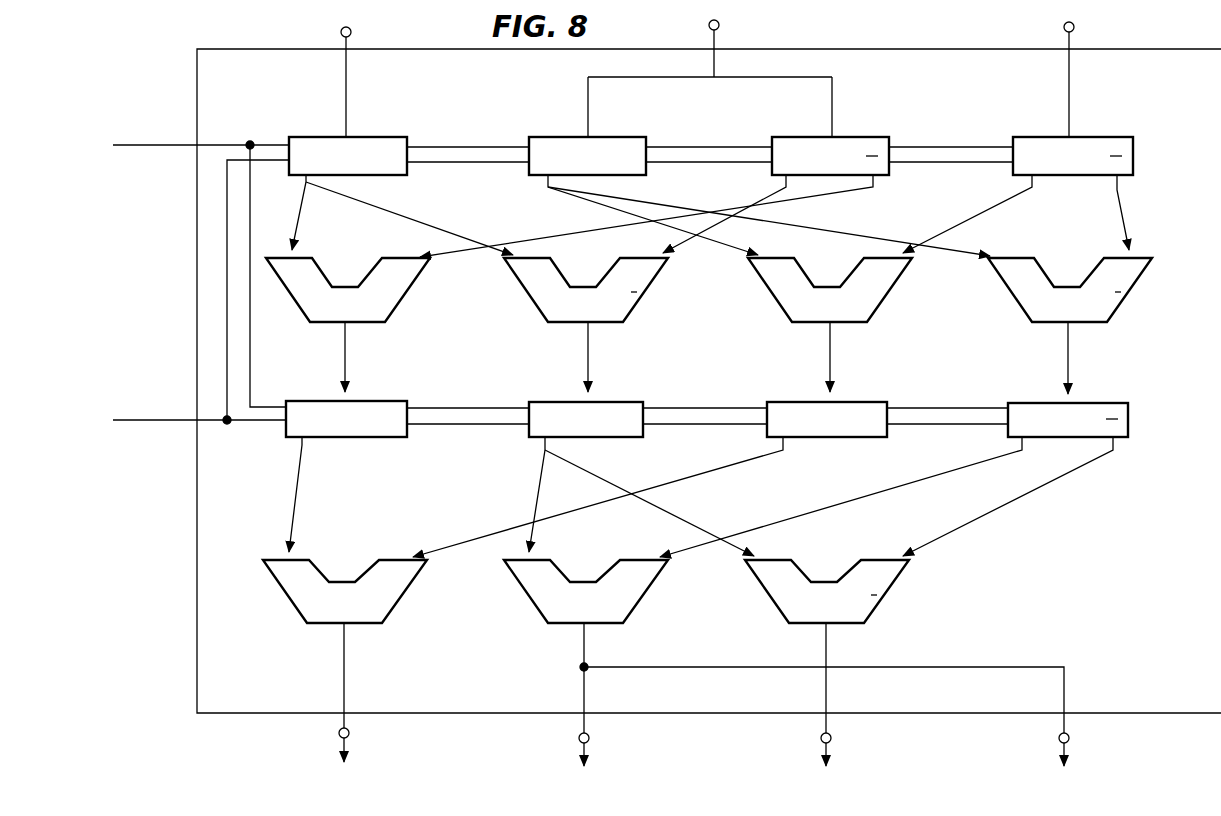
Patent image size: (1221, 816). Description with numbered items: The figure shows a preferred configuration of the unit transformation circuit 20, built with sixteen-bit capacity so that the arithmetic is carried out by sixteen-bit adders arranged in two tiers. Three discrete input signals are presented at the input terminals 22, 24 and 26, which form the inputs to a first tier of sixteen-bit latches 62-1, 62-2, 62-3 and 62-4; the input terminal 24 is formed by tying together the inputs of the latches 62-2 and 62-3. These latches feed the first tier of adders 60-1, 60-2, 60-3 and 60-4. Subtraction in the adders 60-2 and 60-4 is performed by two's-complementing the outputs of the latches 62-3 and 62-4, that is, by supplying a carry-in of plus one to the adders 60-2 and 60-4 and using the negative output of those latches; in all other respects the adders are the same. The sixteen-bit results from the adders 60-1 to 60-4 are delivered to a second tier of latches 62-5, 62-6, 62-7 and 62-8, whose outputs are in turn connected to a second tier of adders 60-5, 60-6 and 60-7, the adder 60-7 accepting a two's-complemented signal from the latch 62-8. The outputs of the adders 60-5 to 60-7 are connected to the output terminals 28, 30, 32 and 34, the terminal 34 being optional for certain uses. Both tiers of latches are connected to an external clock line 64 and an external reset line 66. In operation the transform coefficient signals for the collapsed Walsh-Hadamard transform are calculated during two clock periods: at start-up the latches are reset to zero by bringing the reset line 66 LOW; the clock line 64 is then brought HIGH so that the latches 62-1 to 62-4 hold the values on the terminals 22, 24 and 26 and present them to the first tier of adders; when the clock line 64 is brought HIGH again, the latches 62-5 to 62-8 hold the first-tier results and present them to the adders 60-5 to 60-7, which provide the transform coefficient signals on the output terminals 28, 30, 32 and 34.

The unit transformation circuit 20 is at (197, 69).
The input terminal 22 is at (351, 30).
The input terminal 24 is at (719, 23).
The input terminal 26 is at (1074, 25).
The output terminal 28 is at (349, 733).
The output terminal 30 is at (589, 738).
The output terminal 32 is at (831, 738).
The output terminal 34 is at (1069, 738).
The adder 60-1 is at (400, 303).
The adder 60-2 is at (643, 303).
The adder 60-3 is at (885, 303).
The adder 60-4 is at (1118, 303).
The adder 60-5 is at (396, 603).
The adder 60-6 is at (637, 603).
The adder 60-7 is at (880, 604).
The latch 62-1 is at (380, 135).
The latch 62-2 is at (630, 137).
The latch 62-3 is at (874, 137).
The latch 62-4 is at (1115, 137).
The latch 62-5 is at (375, 400).
The latch 62-6 is at (623, 400).
The latch 62-7 is at (871, 400).
The latch 62-8 is at (1116, 403).
The clock line 64 is at (143, 148).
The reset line 66 is at (140, 423).